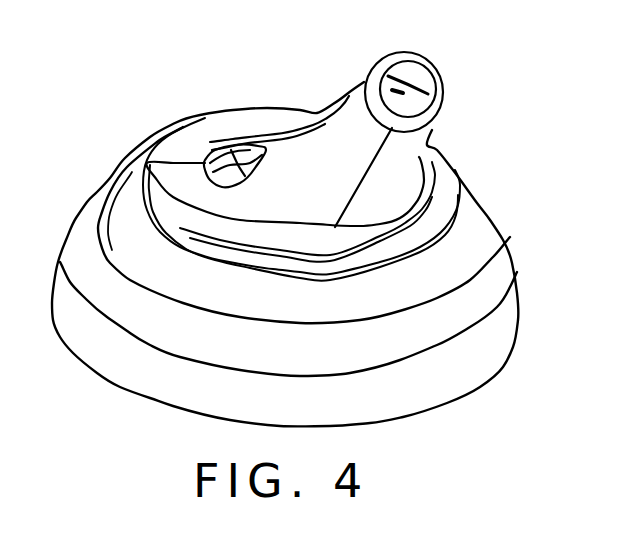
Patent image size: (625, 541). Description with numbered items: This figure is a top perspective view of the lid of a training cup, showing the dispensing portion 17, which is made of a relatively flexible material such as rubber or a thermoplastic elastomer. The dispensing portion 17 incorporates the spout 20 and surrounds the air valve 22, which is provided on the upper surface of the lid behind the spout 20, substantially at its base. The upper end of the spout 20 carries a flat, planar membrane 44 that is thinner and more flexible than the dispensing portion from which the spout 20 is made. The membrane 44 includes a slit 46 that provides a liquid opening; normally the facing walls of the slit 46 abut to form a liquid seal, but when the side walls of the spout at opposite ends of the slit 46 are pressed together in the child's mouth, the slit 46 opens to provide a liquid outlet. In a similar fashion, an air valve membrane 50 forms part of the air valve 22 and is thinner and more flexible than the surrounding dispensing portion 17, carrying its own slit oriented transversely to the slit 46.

The dispensing portion 17 is at (267, 193).
The spout 20 is at (412, 148).
The air valve 22 is at (229, 102).
The membrane 44 is at (415, 78).
The slit 46 is at (372, 77).
The air valve membrane 50 is at (207, 157).